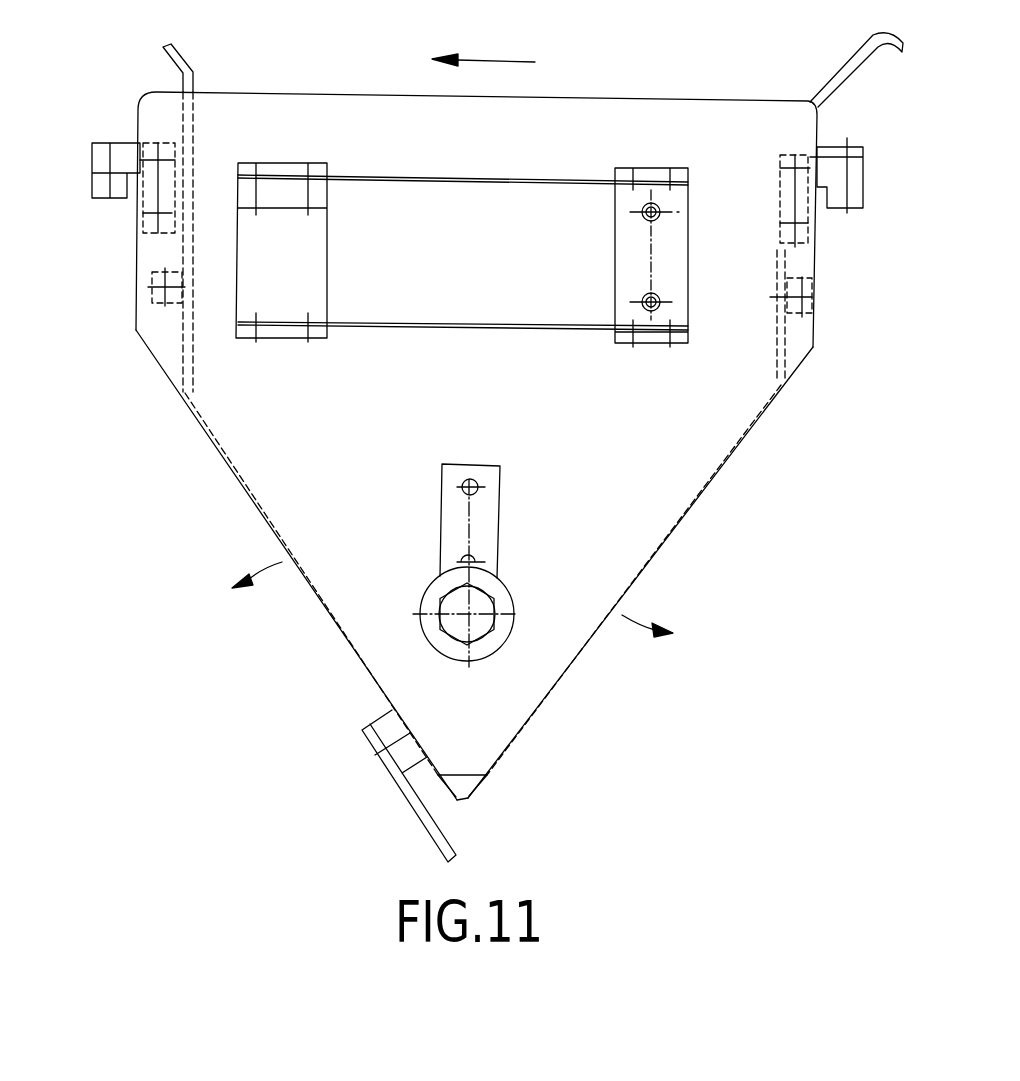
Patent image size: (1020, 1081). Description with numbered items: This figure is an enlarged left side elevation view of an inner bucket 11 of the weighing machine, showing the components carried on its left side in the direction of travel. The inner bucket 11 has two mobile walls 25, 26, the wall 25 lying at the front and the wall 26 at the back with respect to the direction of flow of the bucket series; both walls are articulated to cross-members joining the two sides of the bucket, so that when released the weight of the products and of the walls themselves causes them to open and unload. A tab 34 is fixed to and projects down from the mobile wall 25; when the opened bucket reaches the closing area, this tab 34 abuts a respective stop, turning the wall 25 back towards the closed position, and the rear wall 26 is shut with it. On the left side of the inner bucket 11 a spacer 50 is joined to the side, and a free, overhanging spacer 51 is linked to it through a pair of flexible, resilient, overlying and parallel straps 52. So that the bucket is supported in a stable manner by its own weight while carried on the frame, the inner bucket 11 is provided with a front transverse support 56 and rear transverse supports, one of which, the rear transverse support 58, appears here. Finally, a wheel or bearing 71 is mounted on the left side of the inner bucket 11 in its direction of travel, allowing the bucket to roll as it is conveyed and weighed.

The inner bucket 11 is at (735, 115).
The mobile wall 25 is at (220, 453).
The mobile wall 26 is at (692, 493).
The tab 34 is at (417, 805).
The spacer 50 is at (668, 257).
The spacer 51 is at (303, 257).
The straps 52 is at (477, 323).
The front transverse support 56 is at (100, 190).
The rear transverse support 58 is at (853, 202).
The wheel or bearing 71 is at (502, 598).